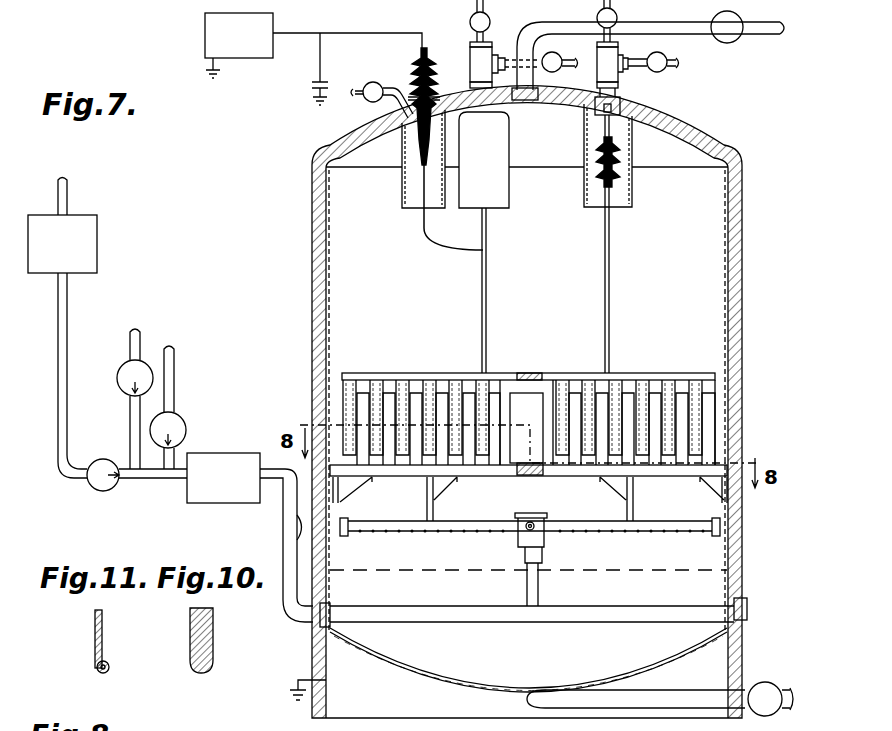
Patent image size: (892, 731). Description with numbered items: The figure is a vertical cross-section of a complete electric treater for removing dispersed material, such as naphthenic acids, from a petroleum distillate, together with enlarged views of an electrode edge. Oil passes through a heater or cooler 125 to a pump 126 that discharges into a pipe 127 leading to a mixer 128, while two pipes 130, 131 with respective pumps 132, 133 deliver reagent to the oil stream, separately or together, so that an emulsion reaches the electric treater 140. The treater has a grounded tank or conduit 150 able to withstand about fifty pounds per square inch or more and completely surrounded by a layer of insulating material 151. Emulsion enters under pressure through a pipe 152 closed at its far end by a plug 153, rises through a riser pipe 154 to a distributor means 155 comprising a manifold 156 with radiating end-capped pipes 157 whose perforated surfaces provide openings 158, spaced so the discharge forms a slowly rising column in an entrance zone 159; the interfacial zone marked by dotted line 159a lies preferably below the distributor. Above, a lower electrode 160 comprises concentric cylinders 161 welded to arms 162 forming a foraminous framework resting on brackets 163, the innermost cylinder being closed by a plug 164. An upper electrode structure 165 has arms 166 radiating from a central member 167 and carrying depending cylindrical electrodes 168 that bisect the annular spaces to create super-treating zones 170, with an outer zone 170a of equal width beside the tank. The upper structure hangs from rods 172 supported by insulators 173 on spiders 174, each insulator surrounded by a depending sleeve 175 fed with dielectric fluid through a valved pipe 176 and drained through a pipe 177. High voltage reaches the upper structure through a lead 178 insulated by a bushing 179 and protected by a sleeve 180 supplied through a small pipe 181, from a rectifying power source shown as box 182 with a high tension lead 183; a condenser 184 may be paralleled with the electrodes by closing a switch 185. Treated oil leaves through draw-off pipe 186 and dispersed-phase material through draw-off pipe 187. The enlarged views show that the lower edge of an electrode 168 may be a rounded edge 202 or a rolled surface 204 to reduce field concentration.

In FIG. 7, the heater or cooler 125 is at (97, 238).
In FIG. 7, the pump 126 is at (91, 490).
In FIG. 7, the pipe 127 is at (155, 482).
In FIG. 7, the mixer 128 is at (230, 453).
In FIG. 7, the pipe 130 is at (130, 412).
In FIG. 7, the pipe 131 is at (175, 380).
In FIG. 7, the pump 132 is at (118, 368).
In FIG. 7, the pump 133 is at (186, 422).
In FIG. 7, the electric treater 140 is at (292, 268).
In FIG. 7, the tank or conduit 150 is at (740, 228).
In FIG. 7, the layer of insulating material 151 is at (741, 278).
In FIG. 7, the pipe 152 is at (276, 527).
In FIG. 7, the plug 153 is at (748, 602).
In FIG. 7, the riser pipe 154 is at (540, 596).
In FIG. 7, the distributor means 155 is at (557, 546).
In FIG. 7, the manifold 156 is at (516, 534).
In FIG. 7, the end-capped pipes 157 is at (455, 532).
In FIG. 7, the openings 158 is at (400, 532).
In FIG. 7, the entrance zone 159 is at (562, 551).
In FIG. 7, the interfacial zone 159a is at (645, 567).
In FIG. 7, the lower electrode 160 is at (561, 419).
In FIG. 7, the concentric cylinders 161 is at (724, 464).
In FIG. 7, the arms 162 is at (640, 475).
In FIG. 7, the brackets 163 is at (364, 482).
In FIG. 7, the plug 164 is at (545, 477).
In FIG. 7, the upper electrode structure 165 is at (732, 378).
In FIG. 7, the arms 166 is at (628, 373).
In FIG. 7, the central member 167 is at (522, 372).
In FIG. 7, the depending cylindrical electrodes 168 is at (663, 390).
In FIG. 11, the depending cylindrical electrodes 168 is at (96, 632).
In FIG. 10, the depending cylindrical electrodes 168 is at (190, 630).
In FIG. 7, the super-treating zones 170 is at (598, 403).
In FIG. 7, the super-treating zone 170a is at (720, 403).
In FIG. 7, the rods 172 is at (482, 306).
In FIG. 7, the insulators 173 is at (584, 190).
In FIG. 7, the spider 174 is at (594, 124).
In FIG. 7, the depending sleeve 175 is at (505, 198).
In FIG. 7, the valved pipe 176 is at (512, 56).
In FIG. 7, the pipe 177 is at (612, 8).
In FIG. 7, the lead 178 is at (436, 246).
In FIG. 7, the bushing 179 is at (418, 135).
In FIG. 7, the sleeve 180 is at (402, 190).
In FIG. 7, the small pipe 181 is at (396, 84).
In FIG. 7, the box 182 is at (272, 21).
In FIG. 7, the high tension lead 183 is at (346, 33).
In FIG. 7, the condenser 184 is at (312, 98).
In FIG. 7, the switch 185 is at (320, 68).
In FIG. 7, the draw-off pipe 186 is at (570, 22).
In FIG. 7, the draw-off pipe 187 is at (666, 698).
In FIG. 10, the rounded edge 202 is at (196, 674).
In FIG. 11, the rolled surface 204 is at (98, 676).